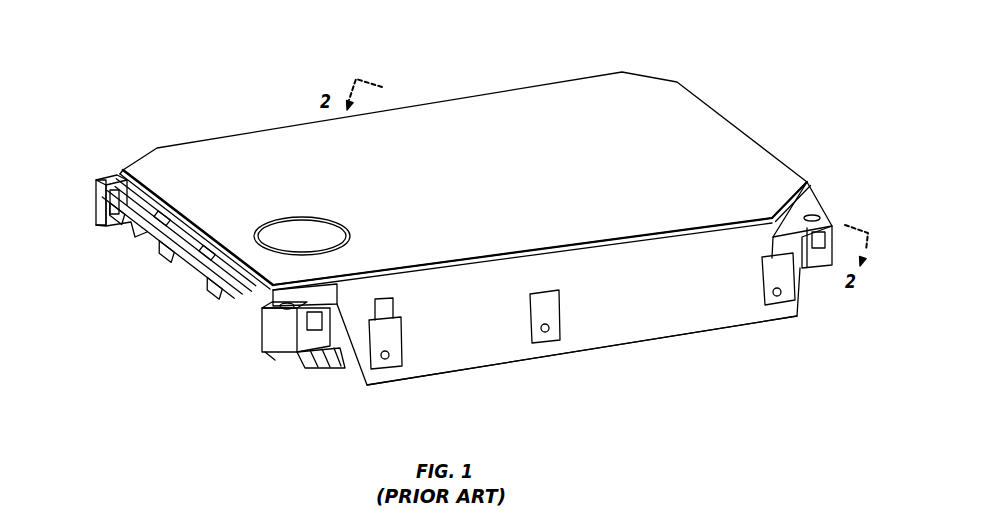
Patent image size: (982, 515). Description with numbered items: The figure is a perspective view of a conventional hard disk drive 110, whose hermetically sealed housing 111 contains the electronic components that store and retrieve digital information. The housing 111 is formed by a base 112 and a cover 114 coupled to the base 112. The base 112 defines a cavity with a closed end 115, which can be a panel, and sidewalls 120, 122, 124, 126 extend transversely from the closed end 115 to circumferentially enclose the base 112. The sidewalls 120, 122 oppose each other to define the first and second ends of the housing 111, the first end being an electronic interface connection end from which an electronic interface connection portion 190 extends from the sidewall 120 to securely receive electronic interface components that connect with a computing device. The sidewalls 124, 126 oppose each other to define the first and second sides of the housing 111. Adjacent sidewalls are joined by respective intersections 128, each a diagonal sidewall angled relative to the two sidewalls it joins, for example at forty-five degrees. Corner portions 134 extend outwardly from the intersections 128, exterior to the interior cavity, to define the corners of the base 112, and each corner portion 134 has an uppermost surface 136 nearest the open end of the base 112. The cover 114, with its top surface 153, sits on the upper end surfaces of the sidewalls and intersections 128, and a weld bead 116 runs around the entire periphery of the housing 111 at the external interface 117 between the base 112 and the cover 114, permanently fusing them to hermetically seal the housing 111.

The hard disk drive 110 is at (712, 52).
The hermetically sealed housing 111 is at (563, 355).
The base 112 is at (690, 310).
The cover 114 is at (390, 130).
The closed end 115 is at (517, 358).
The weld bead 116 is at (797, 203).
The external interface 117 is at (207, 277).
The sidewall 120 is at (257, 277).
The sidewall 122 is at (805, 188).
The sidewall 124 is at (453, 337).
The sidewall 126 is at (110, 178).
The intersection 128 is at (124, 168).
The corner portion 134 is at (267, 357).
The uppermost surface 136 is at (823, 228).
The top surface 153 is at (583, 108).
The electronic interface connection portion 190 is at (213, 279).